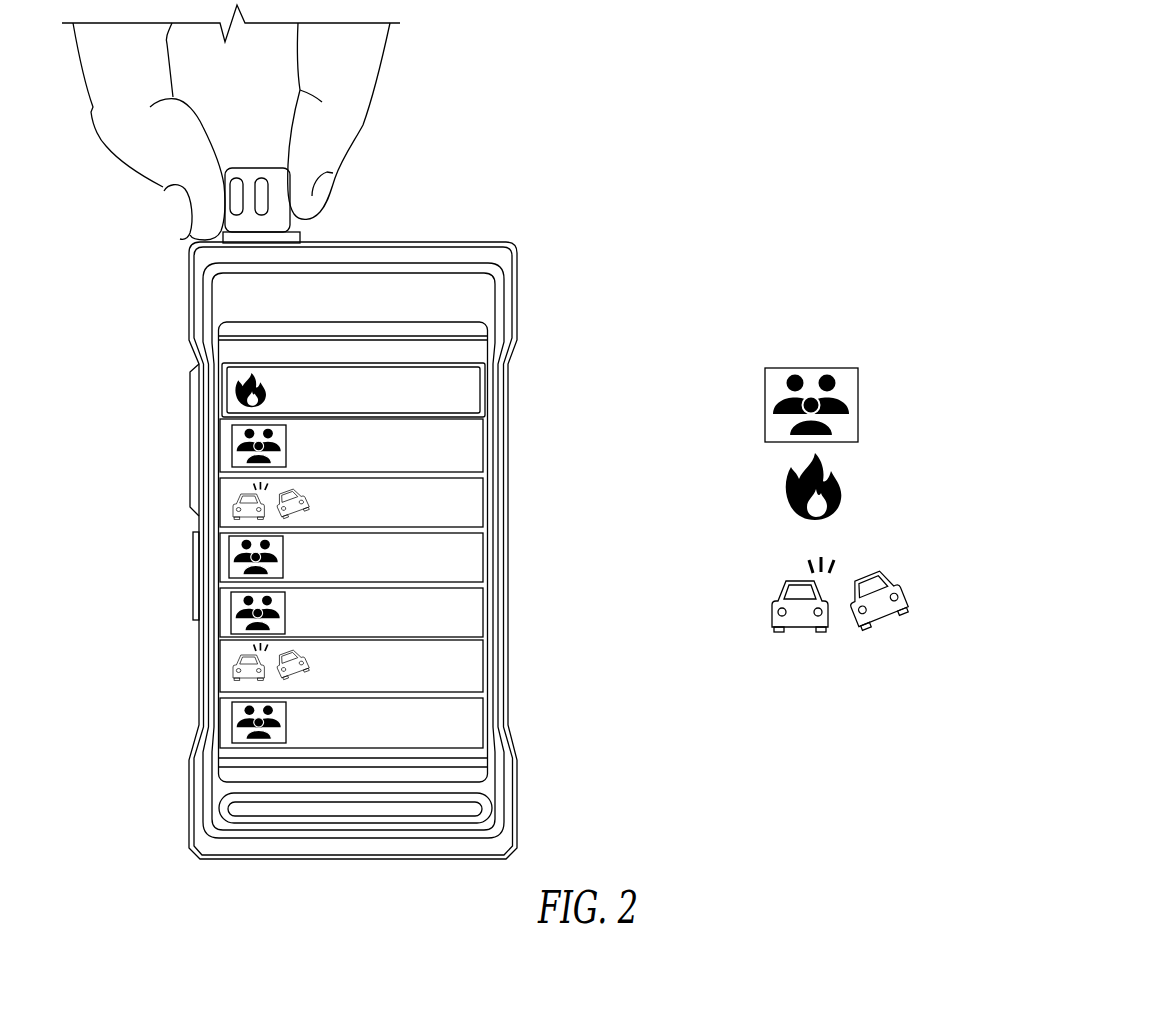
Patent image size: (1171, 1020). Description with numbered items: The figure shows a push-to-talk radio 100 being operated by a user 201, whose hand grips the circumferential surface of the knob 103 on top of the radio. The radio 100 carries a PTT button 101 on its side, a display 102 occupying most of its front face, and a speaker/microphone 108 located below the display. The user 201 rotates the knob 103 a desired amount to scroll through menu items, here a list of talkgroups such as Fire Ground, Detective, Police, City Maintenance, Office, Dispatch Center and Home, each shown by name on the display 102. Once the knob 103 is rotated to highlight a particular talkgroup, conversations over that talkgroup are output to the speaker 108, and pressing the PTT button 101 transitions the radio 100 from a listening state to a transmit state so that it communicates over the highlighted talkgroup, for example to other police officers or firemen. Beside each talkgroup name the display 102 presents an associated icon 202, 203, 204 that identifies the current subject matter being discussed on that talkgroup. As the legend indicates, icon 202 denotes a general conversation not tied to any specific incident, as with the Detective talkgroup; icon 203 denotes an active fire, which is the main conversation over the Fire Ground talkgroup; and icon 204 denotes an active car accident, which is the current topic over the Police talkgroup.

The push-to-talk (PTT) radio 100 is at (521, 394).
The PTT button 101 is at (190, 458).
The display 102 is at (372, 792).
The knob 103 is at (273, 168).
The speaker/microphone 108 is at (467, 813).
The user 201 is at (357, 64).
The icon 202 is at (765, 402).
The icon 203 is at (785, 490).
The icon 204 is at (772, 612).